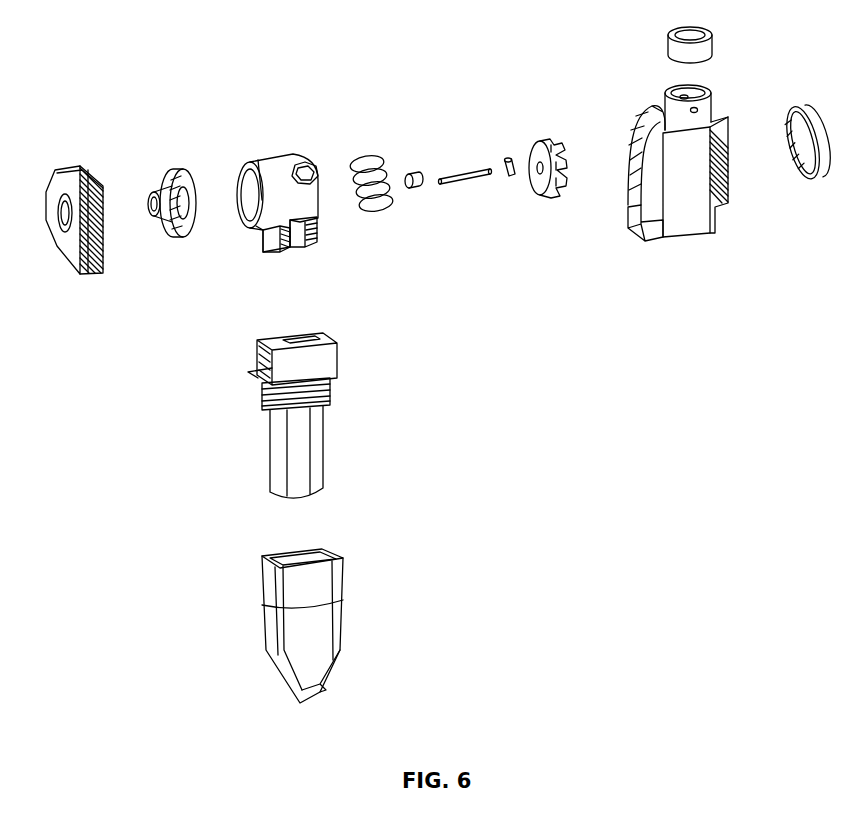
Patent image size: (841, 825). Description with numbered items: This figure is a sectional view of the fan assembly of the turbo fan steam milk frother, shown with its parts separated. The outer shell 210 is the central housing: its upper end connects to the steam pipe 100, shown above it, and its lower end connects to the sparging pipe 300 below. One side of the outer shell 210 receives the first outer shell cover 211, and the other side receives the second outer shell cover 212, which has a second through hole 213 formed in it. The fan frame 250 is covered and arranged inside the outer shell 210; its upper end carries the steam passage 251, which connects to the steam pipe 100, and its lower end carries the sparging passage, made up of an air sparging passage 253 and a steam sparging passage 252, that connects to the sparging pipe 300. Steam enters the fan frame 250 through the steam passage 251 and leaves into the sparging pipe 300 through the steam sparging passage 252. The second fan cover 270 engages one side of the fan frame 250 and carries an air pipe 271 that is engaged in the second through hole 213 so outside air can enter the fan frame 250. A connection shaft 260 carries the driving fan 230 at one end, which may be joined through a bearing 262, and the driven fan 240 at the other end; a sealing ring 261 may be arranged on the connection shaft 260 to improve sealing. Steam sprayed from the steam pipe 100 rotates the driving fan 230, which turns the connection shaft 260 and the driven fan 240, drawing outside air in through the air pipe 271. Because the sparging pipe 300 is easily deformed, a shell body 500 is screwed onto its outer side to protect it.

The steam pipe 100 is at (670, 48).
The outer shell 210 is at (678, 218).
The first outer shell cover 211 is at (812, 175).
The second outer shell cover 212 is at (72, 248).
The second through hole 213 is at (62, 205).
The driving fan 230 is at (543, 153).
The driven fan 240 is at (372, 158).
The fan frame 250 is at (309, 207).
The steam passage 251 is at (305, 162).
The steam sparging passage 252 is at (297, 240).
The air sparging passage 253 is at (282, 243).
The connection shaft 260 is at (450, 181).
The sealing ring 261 is at (512, 172).
The bearing 262 is at (415, 185).
The second fan cover 270 is at (152, 178).
The air pipe 271 is at (152, 208).
The sparging pipe 300 is at (278, 440).
The shell body 500 is at (340, 590).